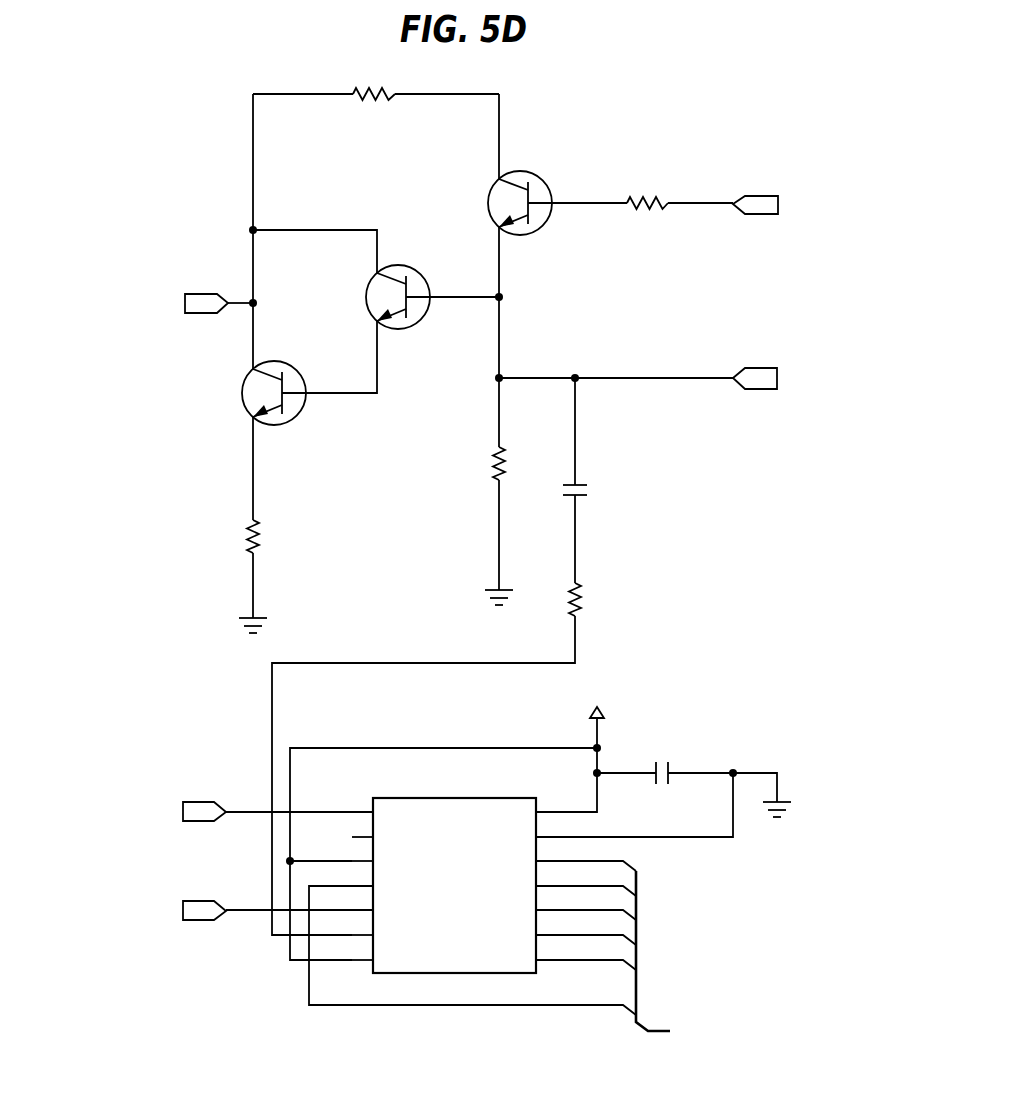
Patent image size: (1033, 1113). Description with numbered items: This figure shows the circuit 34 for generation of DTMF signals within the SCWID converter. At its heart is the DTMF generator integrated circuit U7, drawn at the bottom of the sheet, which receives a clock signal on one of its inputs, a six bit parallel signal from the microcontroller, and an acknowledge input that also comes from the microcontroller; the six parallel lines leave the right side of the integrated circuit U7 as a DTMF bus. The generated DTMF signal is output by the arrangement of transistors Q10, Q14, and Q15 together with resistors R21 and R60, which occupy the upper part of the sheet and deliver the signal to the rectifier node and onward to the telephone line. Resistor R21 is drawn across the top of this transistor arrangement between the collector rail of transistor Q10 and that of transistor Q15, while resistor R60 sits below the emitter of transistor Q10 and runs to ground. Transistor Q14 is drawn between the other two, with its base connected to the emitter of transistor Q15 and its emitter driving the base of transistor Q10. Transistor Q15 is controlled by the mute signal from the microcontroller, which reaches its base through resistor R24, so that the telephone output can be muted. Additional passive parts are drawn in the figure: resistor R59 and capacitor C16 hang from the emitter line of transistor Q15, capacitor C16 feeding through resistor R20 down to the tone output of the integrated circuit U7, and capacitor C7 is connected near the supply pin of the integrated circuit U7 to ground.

The circuit for generation of DTMF signals 34 is at (104, 196).
The resistor R21 is at (372, 83).
The resistor R24 is at (647, 191).
The resistor R59 is at (519, 463).
The resistor R60 is at (272, 536).
The resistor R20 is at (595, 599).
The capacitor C16 is at (597, 490).
The capacitor C7 is at (667, 762).
The transistor Q10 is at (259, 395).
The transistor Q14 is at (383, 302).
The transistor Q15 is at (504, 204).
The DTMF generator integrated circuit U7 is at (457, 874).